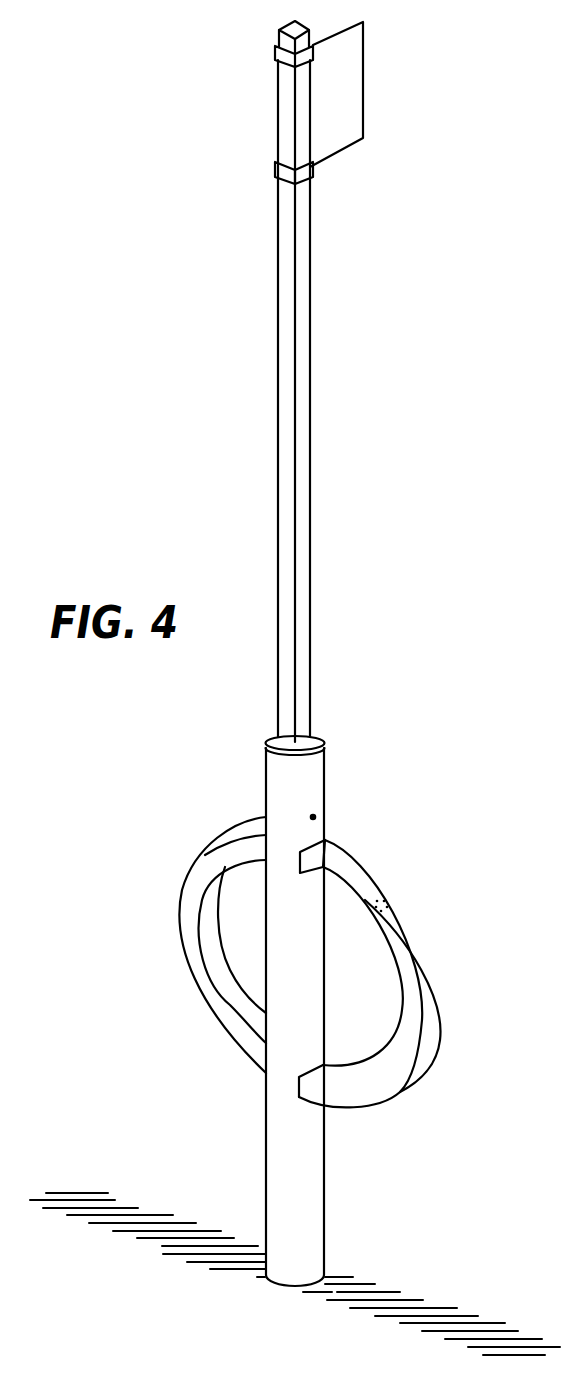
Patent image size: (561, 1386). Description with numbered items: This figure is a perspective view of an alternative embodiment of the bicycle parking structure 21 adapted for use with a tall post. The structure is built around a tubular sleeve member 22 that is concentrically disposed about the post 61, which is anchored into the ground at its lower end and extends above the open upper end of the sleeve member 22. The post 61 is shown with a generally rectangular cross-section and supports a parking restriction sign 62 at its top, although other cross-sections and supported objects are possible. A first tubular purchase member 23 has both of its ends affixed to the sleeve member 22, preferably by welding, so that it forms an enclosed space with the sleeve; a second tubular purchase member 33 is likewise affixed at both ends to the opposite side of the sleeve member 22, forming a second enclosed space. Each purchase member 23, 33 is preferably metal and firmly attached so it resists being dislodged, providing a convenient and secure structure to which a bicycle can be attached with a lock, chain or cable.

The bicycle parking structure 21 is at (310, 1011).
The tubular sleeve member 22 is at (317, 782).
The first tubular purchase member 23 is at (427, 985).
The second tubular purchase member 33 is at (195, 878).
The post 61 is at (310, 368).
The parking restriction sign 62 is at (330, 140).